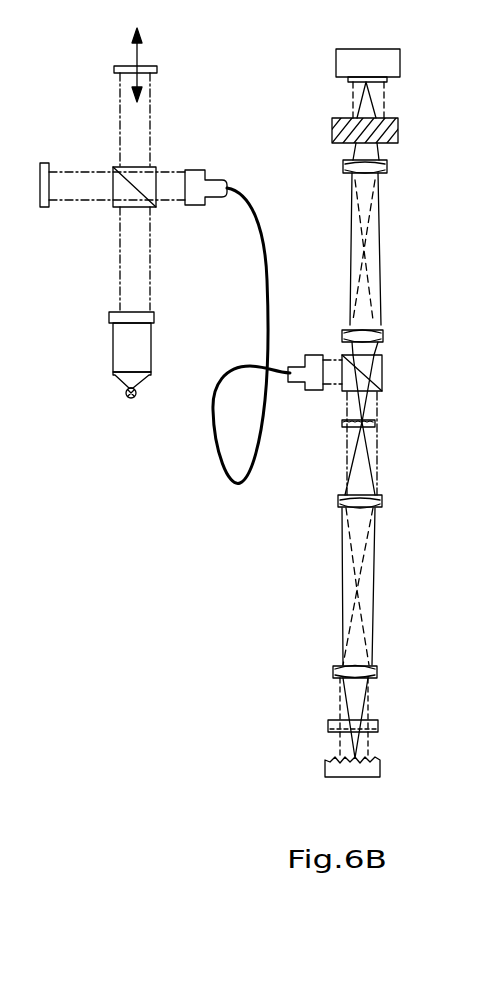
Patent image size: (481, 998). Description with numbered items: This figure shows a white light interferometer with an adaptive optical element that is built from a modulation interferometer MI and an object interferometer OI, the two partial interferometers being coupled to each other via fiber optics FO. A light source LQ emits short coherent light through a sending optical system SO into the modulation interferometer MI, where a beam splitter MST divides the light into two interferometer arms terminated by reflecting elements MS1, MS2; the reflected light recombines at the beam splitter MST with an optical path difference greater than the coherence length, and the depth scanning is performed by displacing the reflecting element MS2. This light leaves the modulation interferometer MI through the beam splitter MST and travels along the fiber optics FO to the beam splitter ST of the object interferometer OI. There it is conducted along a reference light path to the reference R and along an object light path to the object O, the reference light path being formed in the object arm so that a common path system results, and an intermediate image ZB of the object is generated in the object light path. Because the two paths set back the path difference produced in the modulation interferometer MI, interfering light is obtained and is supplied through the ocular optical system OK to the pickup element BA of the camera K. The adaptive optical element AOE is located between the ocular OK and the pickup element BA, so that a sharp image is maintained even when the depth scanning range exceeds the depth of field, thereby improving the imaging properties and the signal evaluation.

The camera K is at (335, 60).
The pickup element BA is at (347, 85).
The adaptive optical element AOE is at (330, 133).
The ocular optical system OK is at (343, 173).
The beam splitter ST is at (343, 357).
The intermediate image ZB is at (338, 427).
The object interferometer OI is at (318, 537).
The reference R is at (328, 725).
The object O is at (325, 762).
The reflecting element MS2 is at (163, 60).
The beam splitter of modulation interferometer MST is at (112, 163).
The reflecting element MS1 is at (43, 208).
The modulation interferometer MI is at (108, 282).
The sending optical system SO is at (108, 350).
The light source LQ is at (130, 402).
The fiber optics FO is at (225, 480).